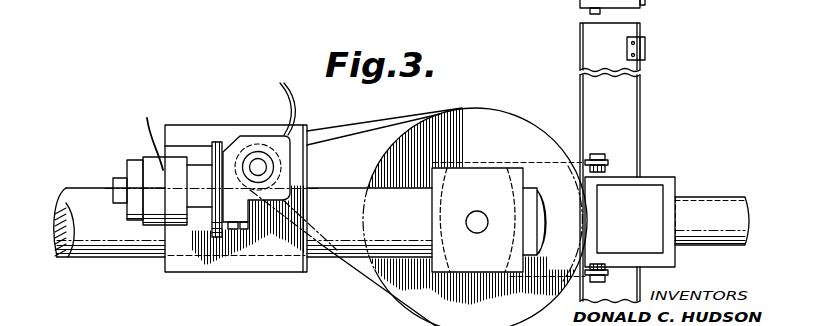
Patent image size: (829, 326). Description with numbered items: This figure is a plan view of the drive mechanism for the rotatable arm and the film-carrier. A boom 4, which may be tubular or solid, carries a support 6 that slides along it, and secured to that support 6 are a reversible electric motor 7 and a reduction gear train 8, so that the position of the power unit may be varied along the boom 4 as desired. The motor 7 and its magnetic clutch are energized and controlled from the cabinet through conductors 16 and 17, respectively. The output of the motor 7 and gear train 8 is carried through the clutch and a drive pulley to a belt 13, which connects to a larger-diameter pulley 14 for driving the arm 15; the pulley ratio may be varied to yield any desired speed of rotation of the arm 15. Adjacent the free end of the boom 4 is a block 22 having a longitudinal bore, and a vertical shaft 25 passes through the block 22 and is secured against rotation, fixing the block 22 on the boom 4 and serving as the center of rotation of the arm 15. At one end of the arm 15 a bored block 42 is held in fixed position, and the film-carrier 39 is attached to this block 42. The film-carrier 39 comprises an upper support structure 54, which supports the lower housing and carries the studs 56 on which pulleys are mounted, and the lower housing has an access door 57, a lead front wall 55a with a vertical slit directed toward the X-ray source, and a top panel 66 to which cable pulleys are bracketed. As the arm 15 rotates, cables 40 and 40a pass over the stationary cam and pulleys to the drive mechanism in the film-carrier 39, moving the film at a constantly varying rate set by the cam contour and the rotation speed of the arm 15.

The boom 4 is at (117, 240).
The support 6 is at (178, 263).
The reversible electric motor 7 is at (173, 167).
The reduction gear train 8 is at (245, 138).
The belt 13 is at (362, 272).
The pulley 14 is at (419, 295).
The arm 15 is at (720, 203).
The conductor 16 is at (145, 133).
The conductor 17 is at (278, 93).
The block 22 is at (490, 181).
The vertical shaft 25 is at (477, 211).
The film-carrier 39 is at (661, 93).
The cable 40 is at (580, 268).
The cable 40a is at (576, 161).
The block 42 is at (604, 170).
The upper support structure 54 is at (678, 183).
The front wall 55a is at (582, 62).
The stud 56 is at (607, 250).
The access door 57 is at (643, 100).
The top panel 66 is at (620, 115).